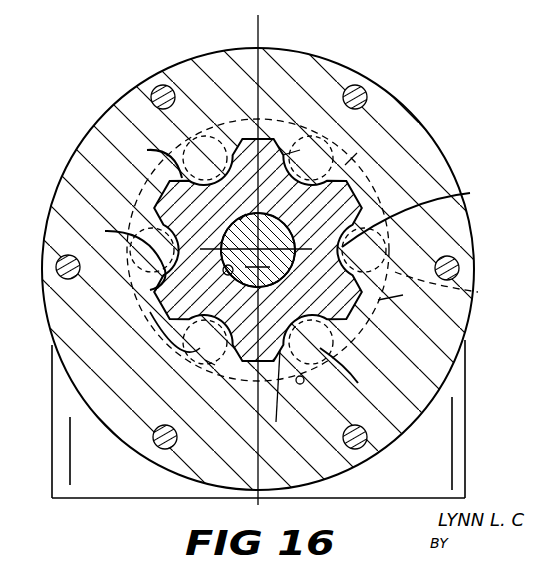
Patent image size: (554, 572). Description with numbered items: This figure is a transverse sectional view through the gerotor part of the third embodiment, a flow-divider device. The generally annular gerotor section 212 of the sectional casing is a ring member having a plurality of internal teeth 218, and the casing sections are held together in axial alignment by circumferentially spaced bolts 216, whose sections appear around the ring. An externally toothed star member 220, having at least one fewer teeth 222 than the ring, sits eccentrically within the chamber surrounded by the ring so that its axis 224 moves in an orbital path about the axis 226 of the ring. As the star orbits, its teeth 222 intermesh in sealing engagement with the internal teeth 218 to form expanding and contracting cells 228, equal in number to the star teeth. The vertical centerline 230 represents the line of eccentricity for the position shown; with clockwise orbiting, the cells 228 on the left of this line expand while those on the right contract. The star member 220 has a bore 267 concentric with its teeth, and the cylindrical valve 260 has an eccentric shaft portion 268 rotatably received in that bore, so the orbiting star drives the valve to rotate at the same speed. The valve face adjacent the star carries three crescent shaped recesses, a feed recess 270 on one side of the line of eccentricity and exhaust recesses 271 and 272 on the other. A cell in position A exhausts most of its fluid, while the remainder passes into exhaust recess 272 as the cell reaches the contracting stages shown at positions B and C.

The gerotor section 212 is at (410, 122).
The bolts 216 is at (458, 260).
The internal teeth 218 is at (213, 177).
The star member 220 is at (295, 172).
The teeth 222 is at (402, 229).
The axis 224 is at (282, 232).
The axis 226 is at (283, 278).
The cells 228 is at (336, 148).
The vertical centerline 230 is at (260, 40).
The valve 260 is at (463, 292).
The bore 267 is at (226, 274).
The shaft portion 268 is at (240, 220).
The feed recess 270 is at (212, 345).
The exhaust recess 271 is at (318, 343).
The exhaust recess 272 is at (352, 190).
The position A is at (276, 397).
The position B is at (399, 297).
The position C is at (359, 154).